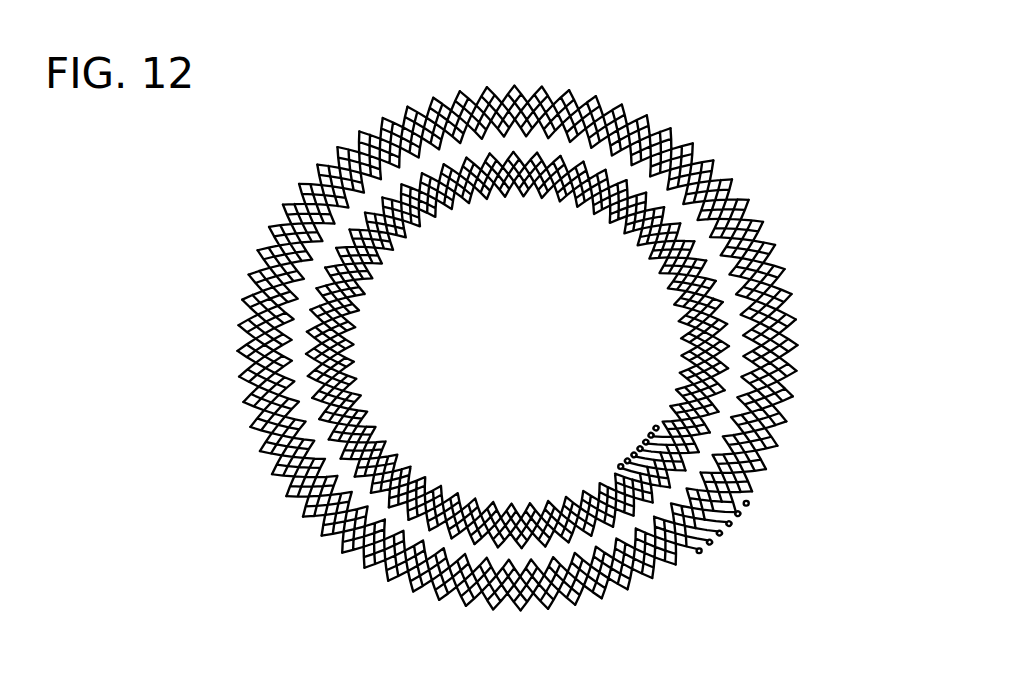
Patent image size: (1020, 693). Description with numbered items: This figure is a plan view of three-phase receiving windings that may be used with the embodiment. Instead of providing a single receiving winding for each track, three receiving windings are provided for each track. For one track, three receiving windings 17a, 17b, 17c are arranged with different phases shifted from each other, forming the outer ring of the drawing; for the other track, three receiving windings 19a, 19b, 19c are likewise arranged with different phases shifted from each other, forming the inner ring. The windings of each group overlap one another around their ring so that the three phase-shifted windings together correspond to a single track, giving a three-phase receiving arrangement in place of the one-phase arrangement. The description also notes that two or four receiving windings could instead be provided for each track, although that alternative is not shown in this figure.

The receiving winding 17a is at (797, 368).
The receiving winding 17b is at (797, 393).
The receiving winding 17c is at (787, 423).
The receiving winding 19a is at (675, 310).
The receiving winding 19b is at (672, 335).
The receiving winding 19c is at (672, 358).